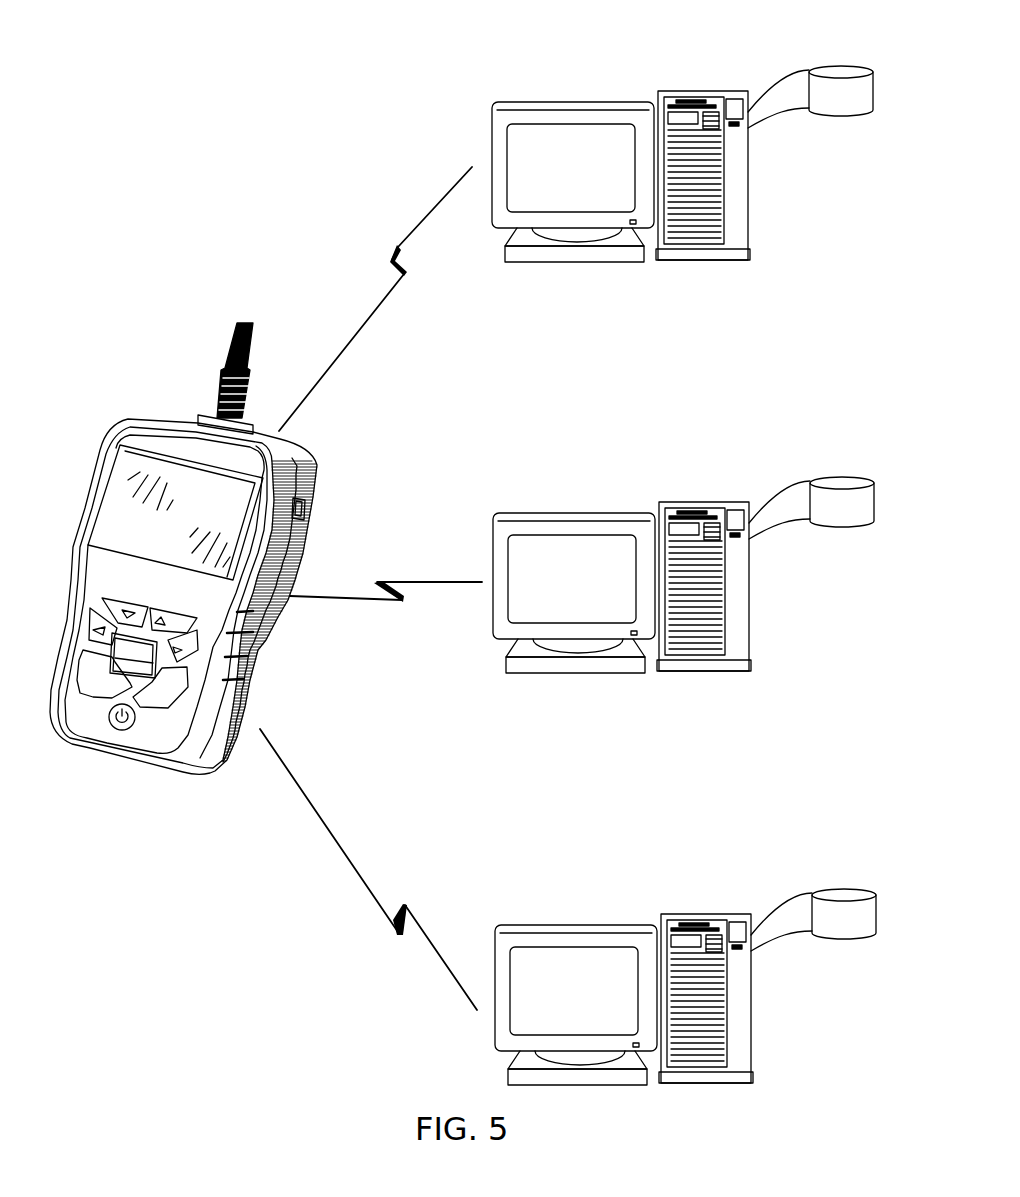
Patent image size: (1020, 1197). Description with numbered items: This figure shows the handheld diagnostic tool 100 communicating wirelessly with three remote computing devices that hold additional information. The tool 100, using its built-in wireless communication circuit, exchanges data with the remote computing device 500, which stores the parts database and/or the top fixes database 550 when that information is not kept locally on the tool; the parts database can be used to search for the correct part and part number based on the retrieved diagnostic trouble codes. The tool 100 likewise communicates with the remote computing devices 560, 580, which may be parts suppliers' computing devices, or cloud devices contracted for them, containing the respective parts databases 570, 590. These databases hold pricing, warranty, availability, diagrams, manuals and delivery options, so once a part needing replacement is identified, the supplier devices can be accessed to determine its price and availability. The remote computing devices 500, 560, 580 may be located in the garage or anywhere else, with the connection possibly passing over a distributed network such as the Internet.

The diagnostic tool 100 is at (142, 414).
The remote computing device 500 is at (584, 100).
The top fixes database 550 is at (846, 65).
The remote computing device 560 is at (584, 512).
The parts database 570 is at (846, 478).
The remote computing device 580 is at (584, 925).
The parts database 590 is at (847, 890).